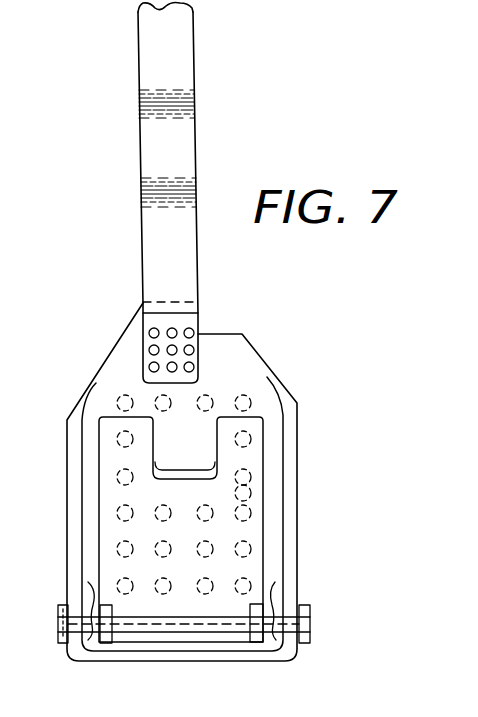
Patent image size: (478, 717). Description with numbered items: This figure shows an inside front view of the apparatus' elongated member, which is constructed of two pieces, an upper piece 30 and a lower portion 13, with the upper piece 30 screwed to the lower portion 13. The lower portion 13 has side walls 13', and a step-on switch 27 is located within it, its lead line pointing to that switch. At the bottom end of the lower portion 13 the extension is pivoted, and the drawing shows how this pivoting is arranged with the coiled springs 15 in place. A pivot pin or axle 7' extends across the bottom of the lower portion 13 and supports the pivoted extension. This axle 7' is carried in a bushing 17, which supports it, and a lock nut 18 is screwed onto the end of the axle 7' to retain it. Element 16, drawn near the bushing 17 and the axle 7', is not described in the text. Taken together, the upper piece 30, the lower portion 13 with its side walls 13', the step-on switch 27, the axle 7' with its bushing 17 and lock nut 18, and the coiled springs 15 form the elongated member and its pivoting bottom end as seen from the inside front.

The upper piece 30 is at (140, 62).
The lower portion 13 is at (179, 482).
The side walls 13' is at (150, 514).
The step-on switch 27 is at (140, 645).
The bushing 17 is at (116, 618).
The lock nut 18 is at (310, 608).
The pivot pin or axle 7' is at (183, 589).
The clip 16 is at (94, 600).
The coiled springs 15 is at (85, 645).